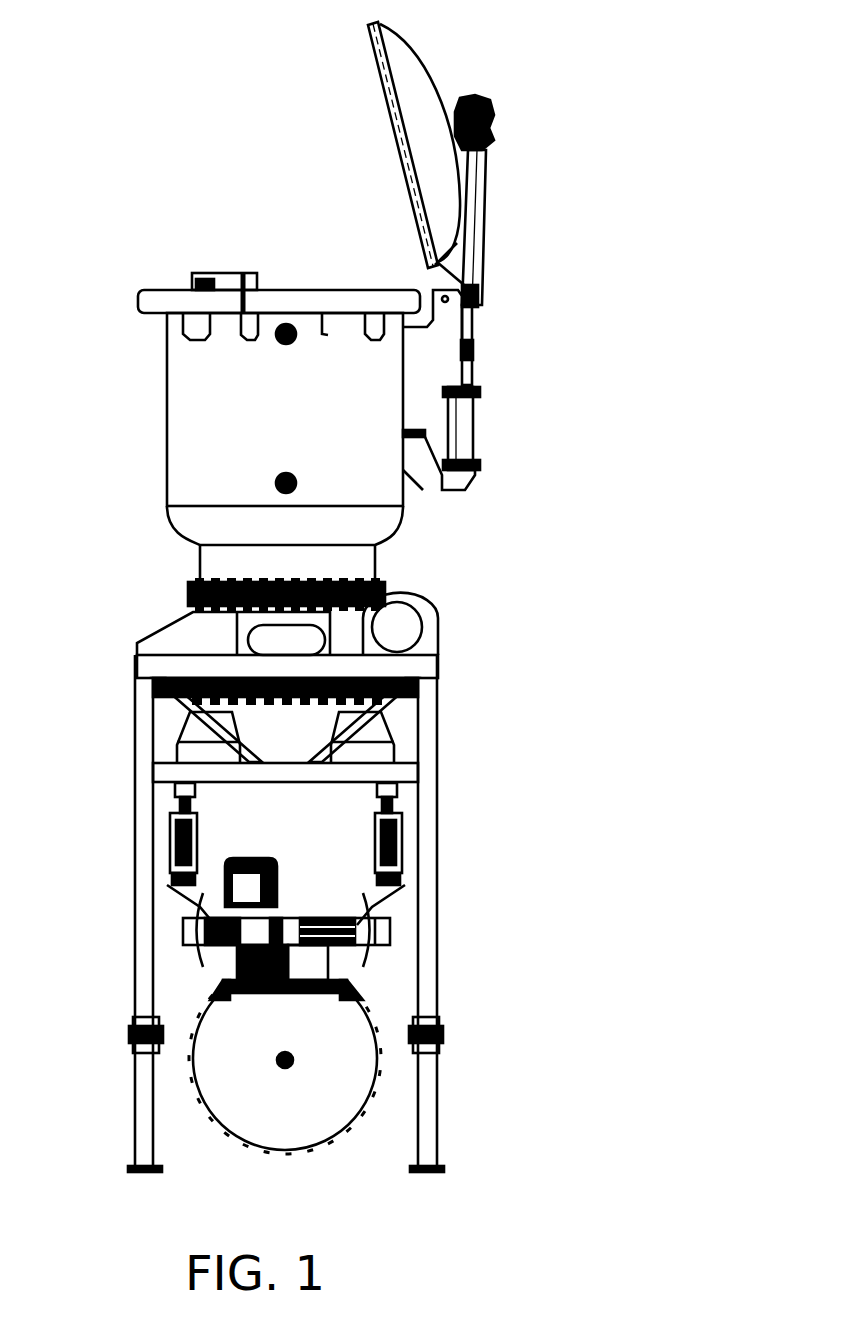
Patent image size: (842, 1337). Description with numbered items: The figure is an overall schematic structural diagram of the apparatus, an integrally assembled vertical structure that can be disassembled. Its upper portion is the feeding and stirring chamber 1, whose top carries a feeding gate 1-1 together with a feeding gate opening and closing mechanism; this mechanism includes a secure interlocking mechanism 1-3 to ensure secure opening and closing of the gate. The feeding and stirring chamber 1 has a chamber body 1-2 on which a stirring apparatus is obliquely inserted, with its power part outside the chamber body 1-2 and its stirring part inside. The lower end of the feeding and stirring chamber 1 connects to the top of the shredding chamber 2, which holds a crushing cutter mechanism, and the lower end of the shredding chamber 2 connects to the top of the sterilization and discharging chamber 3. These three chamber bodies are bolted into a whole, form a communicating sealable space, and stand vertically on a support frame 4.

The feeding and stirring chamber 1 is at (185, 392).
The feeding gate 1-1 is at (435, 202).
The chamber body 1-2 is at (368, 370).
The secure interlocking mechanism 1-3 is at (462, 420).
The shredding chamber 2 is at (188, 587).
The sterilization and discharging chamber 3 is at (257, 827).
The support frame 4 is at (147, 987).